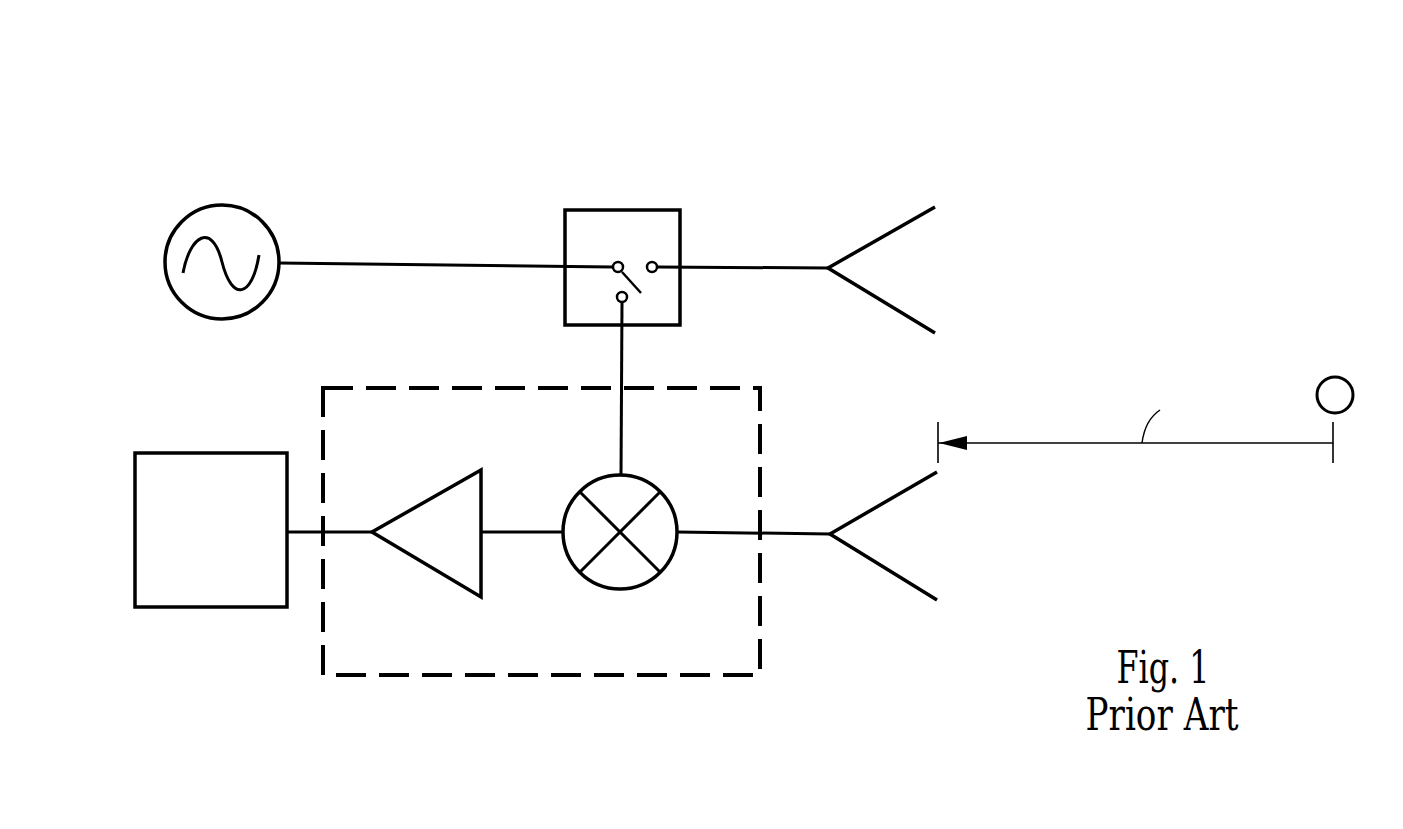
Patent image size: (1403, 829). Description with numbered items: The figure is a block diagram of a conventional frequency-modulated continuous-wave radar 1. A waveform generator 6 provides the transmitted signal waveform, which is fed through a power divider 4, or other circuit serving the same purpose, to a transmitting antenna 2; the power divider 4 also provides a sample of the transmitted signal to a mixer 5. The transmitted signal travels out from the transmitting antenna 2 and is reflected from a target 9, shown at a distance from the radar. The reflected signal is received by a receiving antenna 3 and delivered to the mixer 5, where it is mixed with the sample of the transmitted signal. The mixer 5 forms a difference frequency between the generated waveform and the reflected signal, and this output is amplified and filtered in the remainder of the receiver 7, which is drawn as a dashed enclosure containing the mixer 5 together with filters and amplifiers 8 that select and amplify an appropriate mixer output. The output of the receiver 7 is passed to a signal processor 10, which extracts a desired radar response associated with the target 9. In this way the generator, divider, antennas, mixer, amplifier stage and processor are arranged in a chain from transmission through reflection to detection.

The frequency-modulated continuous-wave radar 1 is at (224, 135).
The transmitting antenna 2 is at (897, 226).
The receiving antenna 3 is at (882, 572).
The power divider 4 is at (632, 210).
The mixer 5 is at (600, 477).
The waveform generator 6 is at (246, 207).
The receiver 7 is at (762, 440).
The filters and amplifiers 8 is at (466, 470).
The target 9 is at (1337, 377).
The signal processor 10 is at (163, 453).